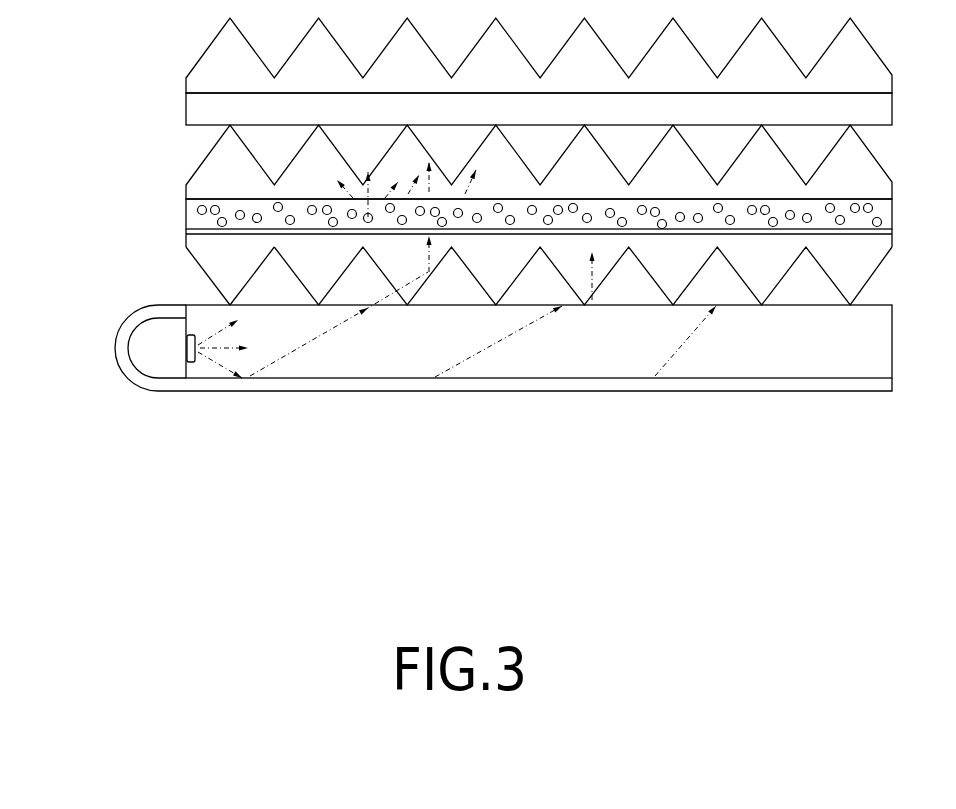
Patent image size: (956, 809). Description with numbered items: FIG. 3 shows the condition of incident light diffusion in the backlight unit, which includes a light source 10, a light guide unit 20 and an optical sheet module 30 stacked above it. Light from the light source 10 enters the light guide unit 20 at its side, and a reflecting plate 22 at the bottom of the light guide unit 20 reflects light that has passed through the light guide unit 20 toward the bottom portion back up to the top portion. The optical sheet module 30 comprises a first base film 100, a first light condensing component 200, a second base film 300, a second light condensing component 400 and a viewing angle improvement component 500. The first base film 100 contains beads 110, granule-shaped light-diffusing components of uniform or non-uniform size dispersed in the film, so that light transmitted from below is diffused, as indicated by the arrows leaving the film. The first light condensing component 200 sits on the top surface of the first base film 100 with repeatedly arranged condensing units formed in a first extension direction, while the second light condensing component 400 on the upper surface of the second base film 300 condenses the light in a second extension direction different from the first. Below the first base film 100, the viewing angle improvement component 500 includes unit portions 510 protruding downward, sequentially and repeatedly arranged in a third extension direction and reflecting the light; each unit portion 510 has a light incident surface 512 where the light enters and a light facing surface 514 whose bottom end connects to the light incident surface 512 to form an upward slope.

The light source 10 is at (193, 363).
The light guide unit 20 is at (350, 366).
The reflecting plate 22 is at (492, 385).
The optical sheet module 30 is at (58, 253).
The first base film 100 is at (186, 213).
The bead 110 is at (210, 204).
The first light condensing component 200 is at (195, 172).
The second base film 300 is at (186, 112).
The second light condensing component 400 is at (194, 66).
The viewing angle improvement component 500 is at (196, 261).
The unit portion 510 is at (76, 268).
The light incident surface 512 is at (213, 277).
The light facing surface 514 is at (232, 288).